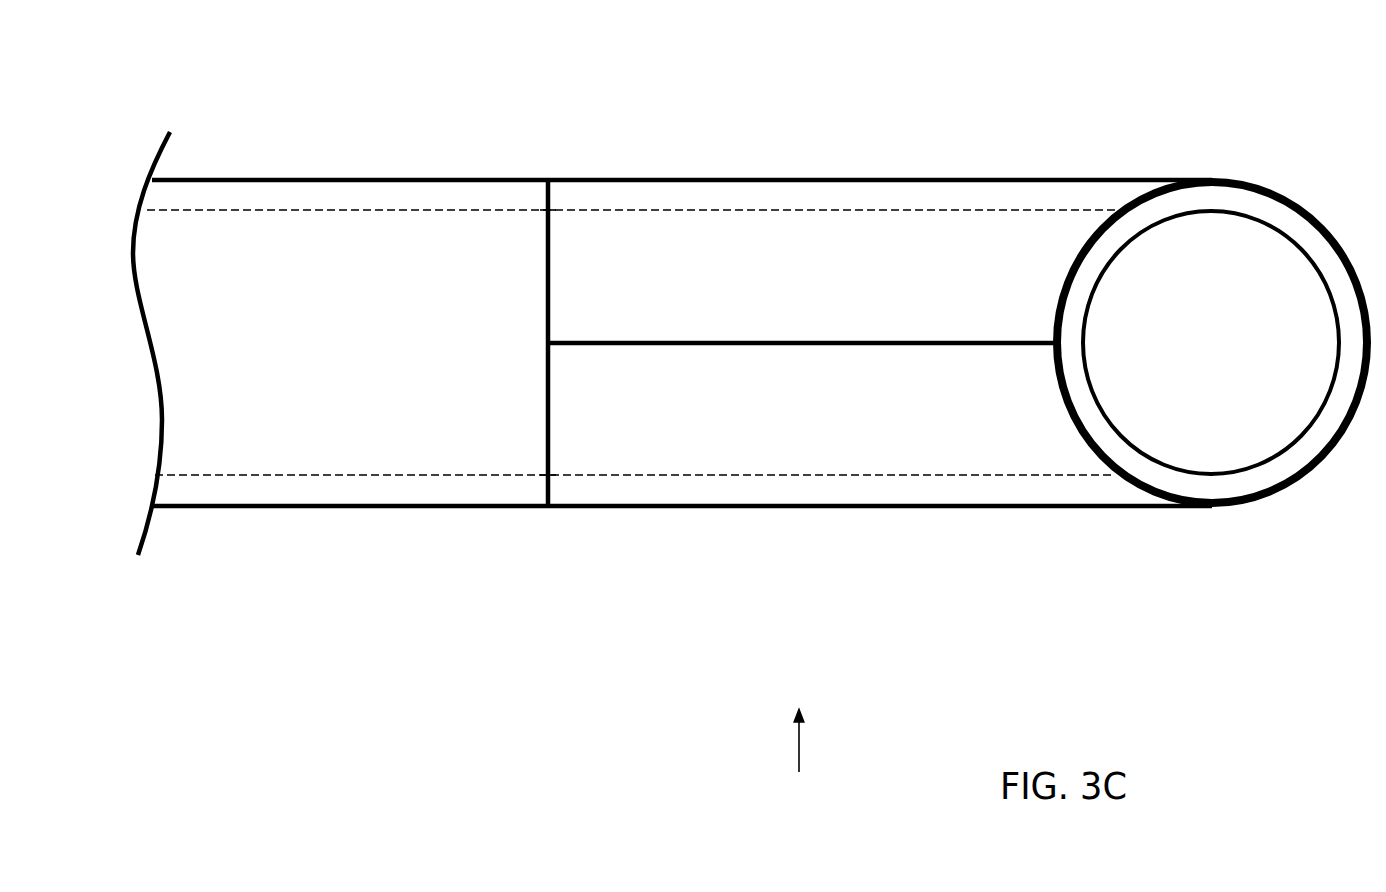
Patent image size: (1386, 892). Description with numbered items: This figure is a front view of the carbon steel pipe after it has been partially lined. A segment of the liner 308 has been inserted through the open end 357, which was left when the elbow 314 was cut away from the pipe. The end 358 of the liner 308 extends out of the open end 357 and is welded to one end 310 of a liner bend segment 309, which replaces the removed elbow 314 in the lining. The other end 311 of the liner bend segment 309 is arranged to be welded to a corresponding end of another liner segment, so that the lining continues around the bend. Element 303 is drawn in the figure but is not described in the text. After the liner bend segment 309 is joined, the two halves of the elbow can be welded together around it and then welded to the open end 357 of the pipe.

The septum / divider wall 303 is at (786, 345).
The liner 308 is at (370, 210).
The liner bend segment 309 is at (1060, 210).
The end of liner bend segment 310 is at (550, 210).
The another end of liner bend segment 311 is at (1285, 232).
The elbow 314 is at (798, 758).
The open end 357 is at (538, 510).
The end of liner 358 is at (545, 210).